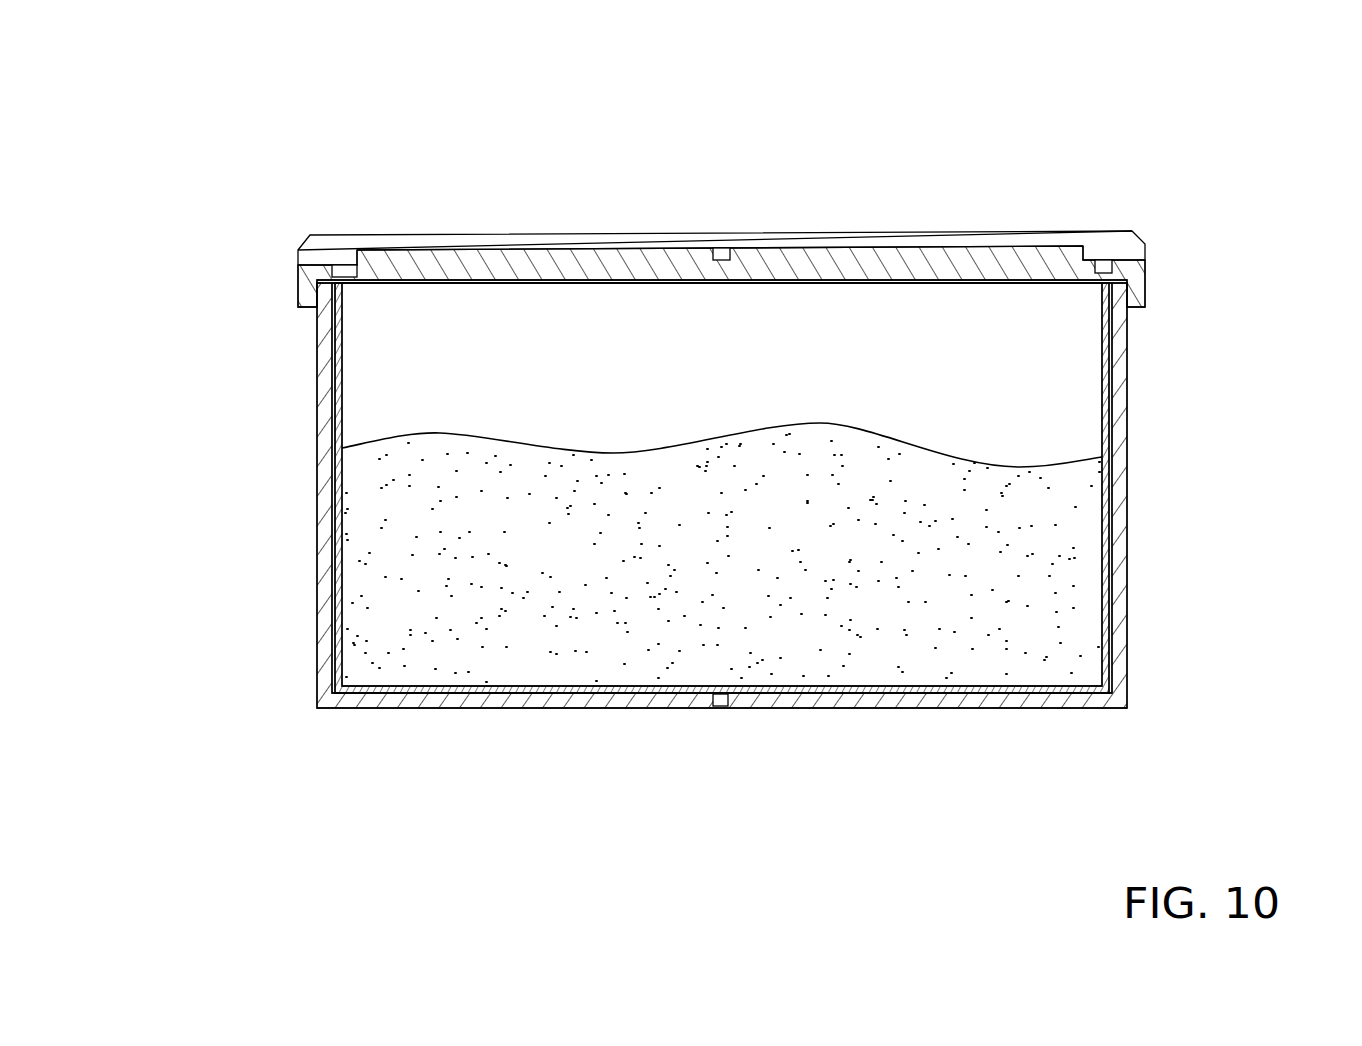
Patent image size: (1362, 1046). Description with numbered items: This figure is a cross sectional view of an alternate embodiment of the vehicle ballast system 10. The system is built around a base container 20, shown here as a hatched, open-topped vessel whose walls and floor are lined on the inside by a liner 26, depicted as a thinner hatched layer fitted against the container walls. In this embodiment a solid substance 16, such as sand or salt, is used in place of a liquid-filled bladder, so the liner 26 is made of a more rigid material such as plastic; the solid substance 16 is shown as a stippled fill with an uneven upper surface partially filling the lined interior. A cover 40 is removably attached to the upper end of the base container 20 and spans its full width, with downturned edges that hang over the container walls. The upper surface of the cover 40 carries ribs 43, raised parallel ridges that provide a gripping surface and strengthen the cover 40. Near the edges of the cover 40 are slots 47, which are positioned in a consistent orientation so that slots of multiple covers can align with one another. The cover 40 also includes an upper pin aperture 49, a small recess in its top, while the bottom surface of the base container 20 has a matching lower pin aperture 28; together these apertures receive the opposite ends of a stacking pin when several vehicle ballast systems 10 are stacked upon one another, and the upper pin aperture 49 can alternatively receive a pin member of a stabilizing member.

The vehicle ballast system 10 is at (1207, 184).
The solid substance 16 is at (362, 595).
The base container 20 is at (317, 692).
The liner 26 is at (340, 400).
The lower pin aperture 28 is at (722, 708).
The cover 40 is at (487, 236).
The ribs 43 is at (631, 240).
The slots 47 is at (307, 252).
The upper pin aperture 49 is at (722, 248).